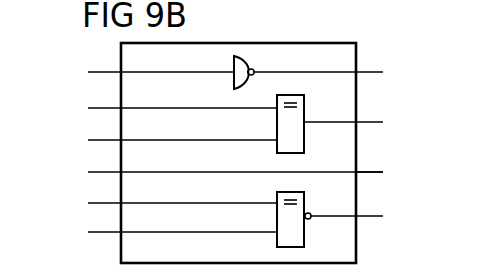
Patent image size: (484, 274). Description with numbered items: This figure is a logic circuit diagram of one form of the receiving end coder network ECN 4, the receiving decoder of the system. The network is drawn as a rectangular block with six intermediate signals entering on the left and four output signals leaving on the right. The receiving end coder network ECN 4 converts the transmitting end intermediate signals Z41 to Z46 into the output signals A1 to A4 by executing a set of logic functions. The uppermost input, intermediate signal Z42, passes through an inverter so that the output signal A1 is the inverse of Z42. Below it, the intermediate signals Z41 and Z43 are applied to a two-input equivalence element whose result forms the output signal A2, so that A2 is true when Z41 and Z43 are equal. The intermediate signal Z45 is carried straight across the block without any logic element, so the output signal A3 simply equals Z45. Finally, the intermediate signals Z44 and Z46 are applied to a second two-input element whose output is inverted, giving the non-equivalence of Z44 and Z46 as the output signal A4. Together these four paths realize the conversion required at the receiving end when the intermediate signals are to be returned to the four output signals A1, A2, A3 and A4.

The receiving end coder network ECN 4 is at (340, 43).
The intermediate signal Z42 is at (137, 72).
The intermediate signal Z41 is at (158, 108).
The intermediate signal Z43 is at (158, 140).
The intermediate signal Z45 is at (211, 172).
The intermediate signal Z44 is at (158, 204).
The intermediate signal Z46 is at (158, 233).
The output signal A1 is at (334, 72).
The output signal A2 is at (360, 122).
The output signal A3 is at (386, 172).
The output signal A4 is at (364, 216).